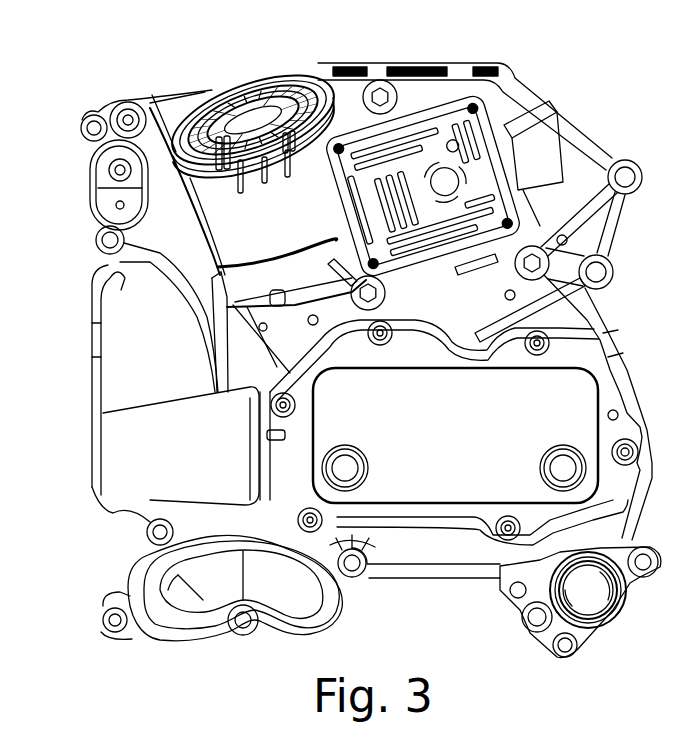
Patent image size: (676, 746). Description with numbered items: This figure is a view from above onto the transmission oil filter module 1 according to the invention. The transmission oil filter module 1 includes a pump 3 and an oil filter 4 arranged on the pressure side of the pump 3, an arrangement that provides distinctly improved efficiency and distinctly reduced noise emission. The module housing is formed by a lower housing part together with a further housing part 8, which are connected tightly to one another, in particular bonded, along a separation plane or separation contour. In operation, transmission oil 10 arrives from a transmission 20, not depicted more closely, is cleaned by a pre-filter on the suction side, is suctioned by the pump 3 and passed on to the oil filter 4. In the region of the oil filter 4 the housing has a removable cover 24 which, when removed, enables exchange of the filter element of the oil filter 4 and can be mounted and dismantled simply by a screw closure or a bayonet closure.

The transmission oil filter module 1 is at (590, 125).
The pump 3 is at (467, 177).
The oil filter 4 is at (248, 115).
The further housing part 8 is at (127, 453).
The transmission oil 10 is at (186, 600).
The transmission 20 is at (293, 681).
The removable cover 24 is at (220, 92).